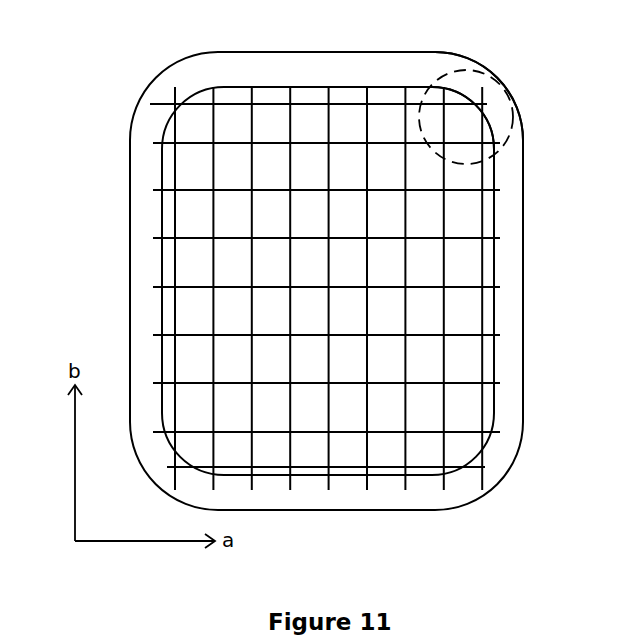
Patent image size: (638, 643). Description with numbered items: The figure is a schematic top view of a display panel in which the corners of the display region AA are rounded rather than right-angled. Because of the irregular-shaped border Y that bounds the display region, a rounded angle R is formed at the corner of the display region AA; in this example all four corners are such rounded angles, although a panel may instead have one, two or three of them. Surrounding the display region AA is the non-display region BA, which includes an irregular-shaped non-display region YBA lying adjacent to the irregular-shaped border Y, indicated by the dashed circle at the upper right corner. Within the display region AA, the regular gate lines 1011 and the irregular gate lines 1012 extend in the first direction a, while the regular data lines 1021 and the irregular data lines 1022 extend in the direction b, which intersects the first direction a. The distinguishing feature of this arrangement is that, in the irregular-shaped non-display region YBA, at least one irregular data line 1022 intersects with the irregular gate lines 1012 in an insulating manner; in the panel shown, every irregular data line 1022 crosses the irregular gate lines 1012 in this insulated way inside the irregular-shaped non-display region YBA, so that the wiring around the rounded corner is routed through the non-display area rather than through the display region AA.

The regular gate lines 1011 is at (193, 237).
The irregular gate lines 1012 is at (272, 102).
The regular data lines 1021 is at (368, 443).
The irregular data lines 1022 is at (173, 315).
The irregular-shaped non-display region YBA is at (475, 72).
The irregular-shaped border Y is at (482, 127).
The angle R is at (518, 163).
The non-display region BA is at (528, 330).
The display region AA is at (462, 407).